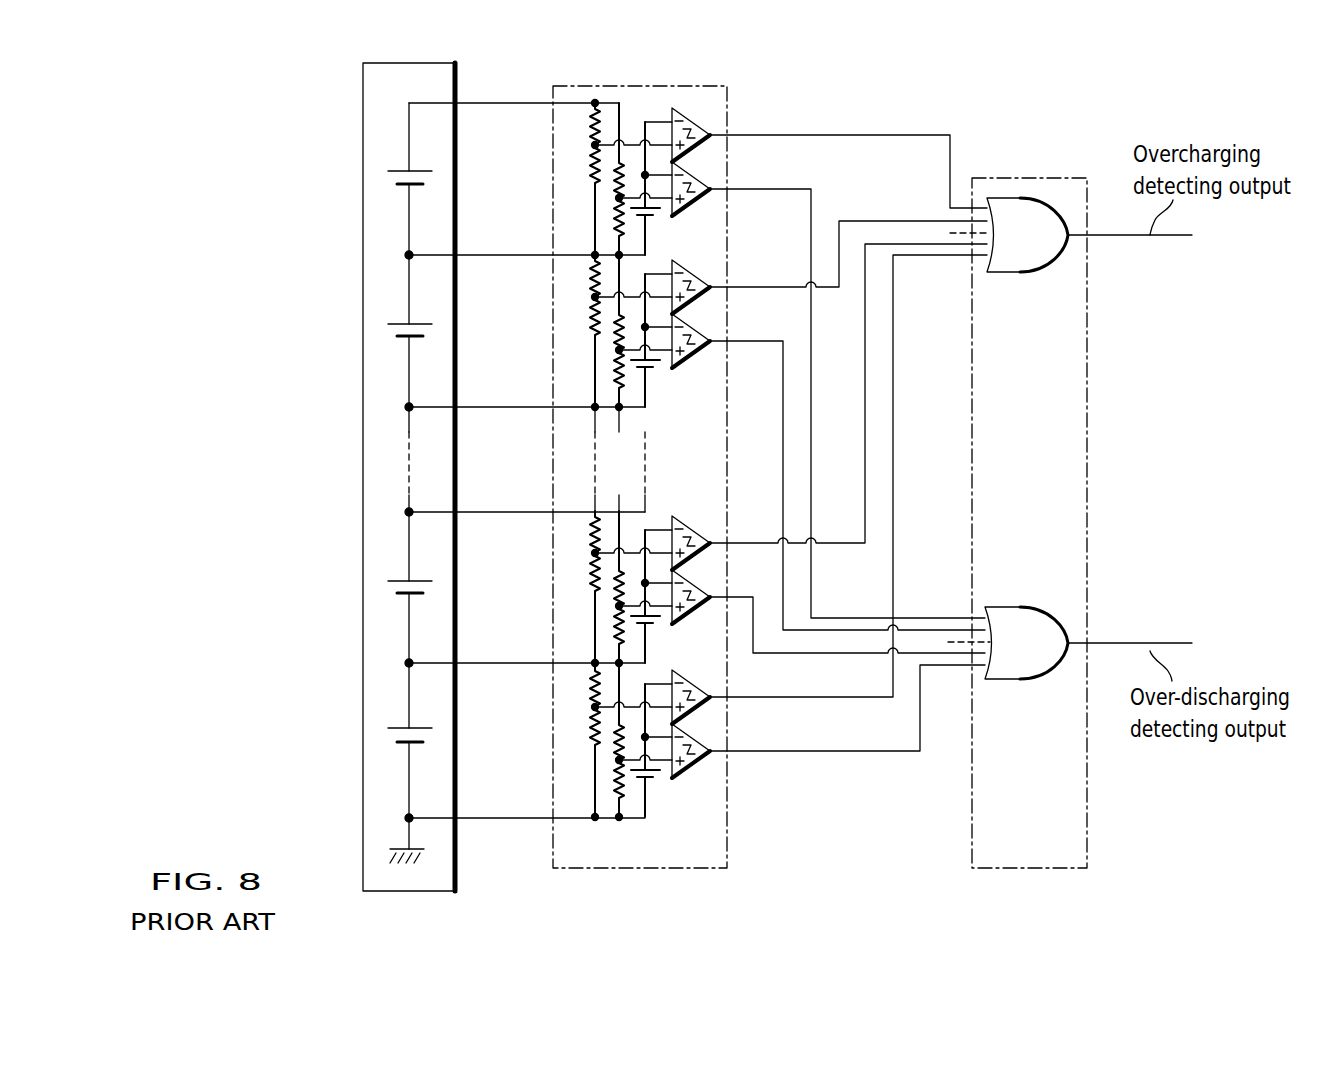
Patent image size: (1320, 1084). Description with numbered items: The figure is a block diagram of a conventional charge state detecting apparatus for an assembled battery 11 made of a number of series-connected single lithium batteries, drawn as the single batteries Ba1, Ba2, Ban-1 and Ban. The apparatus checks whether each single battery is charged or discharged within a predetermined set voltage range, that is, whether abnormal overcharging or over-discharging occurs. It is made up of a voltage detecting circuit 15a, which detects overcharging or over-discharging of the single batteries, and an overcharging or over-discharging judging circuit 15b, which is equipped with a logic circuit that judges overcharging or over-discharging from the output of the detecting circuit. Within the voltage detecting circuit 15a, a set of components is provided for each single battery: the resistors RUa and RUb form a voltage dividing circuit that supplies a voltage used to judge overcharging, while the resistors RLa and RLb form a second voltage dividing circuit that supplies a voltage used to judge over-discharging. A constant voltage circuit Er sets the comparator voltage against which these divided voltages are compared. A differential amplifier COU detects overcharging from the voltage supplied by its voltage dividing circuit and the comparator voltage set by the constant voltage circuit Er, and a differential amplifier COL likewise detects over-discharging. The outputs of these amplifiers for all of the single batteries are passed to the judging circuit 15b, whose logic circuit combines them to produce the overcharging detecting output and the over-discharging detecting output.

The assembled battery 11 is at (464, 477).
The voltage detecting circuit 15a is at (727, 850).
The overcharging or over-discharging judging circuit 15b is at (1020, 178).
The single battery Ban is at (390, 182).
The single battery Ban-1 is at (390, 334).
The single battery Ba2 is at (385, 593).
The single battery Ba1 is at (385, 741).
The resistor RUa is at (587, 135).
The resistor RUb is at (587, 173).
The resistor RLa is at (610, 187).
The resistor RLb is at (612, 228).
The constant voltage circuit Er is at (655, 218).
The differential amplifier COU is at (700, 114).
The differential amplifier COL is at (700, 169).